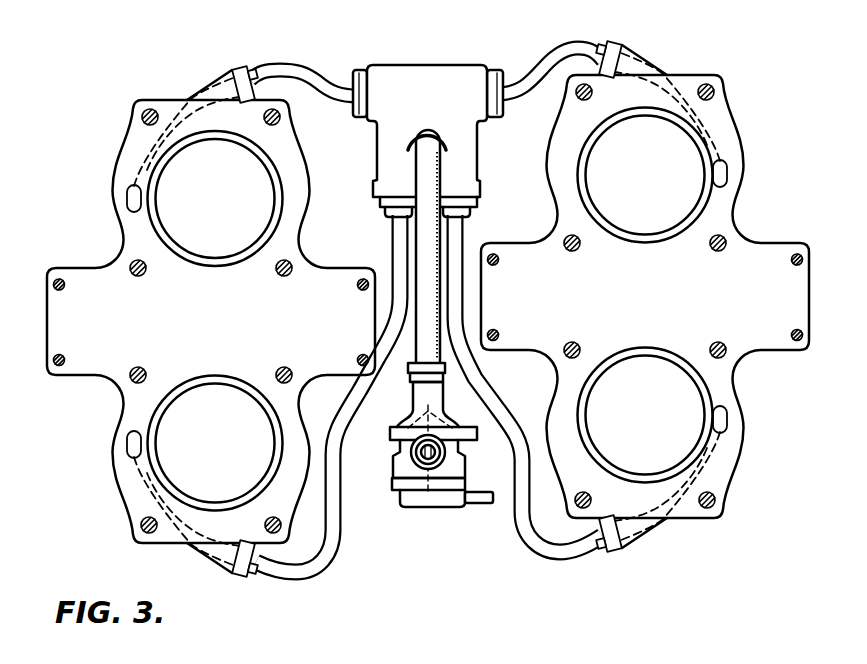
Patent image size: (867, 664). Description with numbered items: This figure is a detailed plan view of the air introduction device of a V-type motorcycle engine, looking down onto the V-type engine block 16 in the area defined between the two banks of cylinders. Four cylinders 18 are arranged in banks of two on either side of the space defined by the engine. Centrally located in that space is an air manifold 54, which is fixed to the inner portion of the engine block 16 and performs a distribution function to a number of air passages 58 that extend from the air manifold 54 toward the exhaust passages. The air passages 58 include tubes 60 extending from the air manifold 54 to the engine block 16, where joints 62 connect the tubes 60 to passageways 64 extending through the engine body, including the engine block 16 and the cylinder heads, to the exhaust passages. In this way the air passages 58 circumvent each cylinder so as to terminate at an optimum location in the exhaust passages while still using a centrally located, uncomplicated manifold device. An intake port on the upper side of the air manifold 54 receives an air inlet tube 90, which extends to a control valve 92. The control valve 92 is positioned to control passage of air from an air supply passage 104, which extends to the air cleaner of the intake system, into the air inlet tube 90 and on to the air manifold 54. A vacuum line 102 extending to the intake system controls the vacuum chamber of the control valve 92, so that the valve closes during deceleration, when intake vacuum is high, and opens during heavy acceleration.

The engine block 16 is at (76, 272).
The cylinders 18 is at (165, 237).
The air manifold 54 is at (432, 64).
The air passages 58 is at (176, 110).
The tubes 60 is at (300, 73).
The joints 62 is at (243, 68).
The passageways 64 is at (143, 158).
The air inlet tube 90 is at (420, 229).
The control valve 92 is at (408, 513).
The vacuum line 102 is at (483, 503).
The air supply passage 104 is at (412, 455).